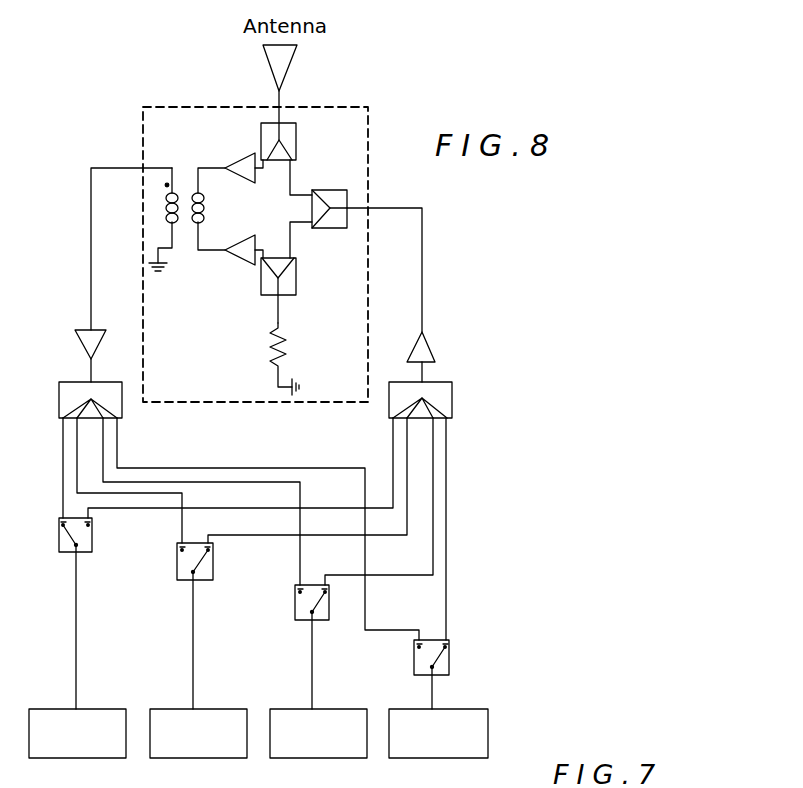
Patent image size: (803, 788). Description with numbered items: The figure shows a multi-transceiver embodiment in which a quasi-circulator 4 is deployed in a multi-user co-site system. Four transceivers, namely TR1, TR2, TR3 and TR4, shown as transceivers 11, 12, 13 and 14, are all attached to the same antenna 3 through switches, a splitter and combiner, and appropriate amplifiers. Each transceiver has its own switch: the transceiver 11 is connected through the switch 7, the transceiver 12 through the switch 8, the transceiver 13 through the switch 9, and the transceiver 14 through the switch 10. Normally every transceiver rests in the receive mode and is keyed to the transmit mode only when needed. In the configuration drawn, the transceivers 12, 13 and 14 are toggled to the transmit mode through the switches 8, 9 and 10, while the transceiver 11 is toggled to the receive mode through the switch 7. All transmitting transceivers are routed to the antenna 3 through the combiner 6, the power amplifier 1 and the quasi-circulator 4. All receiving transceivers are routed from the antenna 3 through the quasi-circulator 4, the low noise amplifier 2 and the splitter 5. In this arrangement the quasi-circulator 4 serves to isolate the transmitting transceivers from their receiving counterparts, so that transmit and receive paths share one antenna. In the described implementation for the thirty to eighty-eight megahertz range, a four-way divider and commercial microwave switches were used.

The power amplifier 1 is at (448, 337).
The low noise amplifier 2 is at (66, 312).
The antenna 3 is at (308, 52).
The quasi-circulator 4 is at (325, 106).
The splitter 5 is at (58, 384).
The combiner 6 is at (452, 385).
The switch 7 is at (58, 552).
The switch 8 is at (177, 579).
The switch 9 is at (295, 619).
The switch 10 is at (414, 677).
The transceiver 11 is at (48, 758).
The transceiver 12 is at (170, 758).
The transceiver 13 is at (289, 758).
The transceiver 14 is at (412, 758).